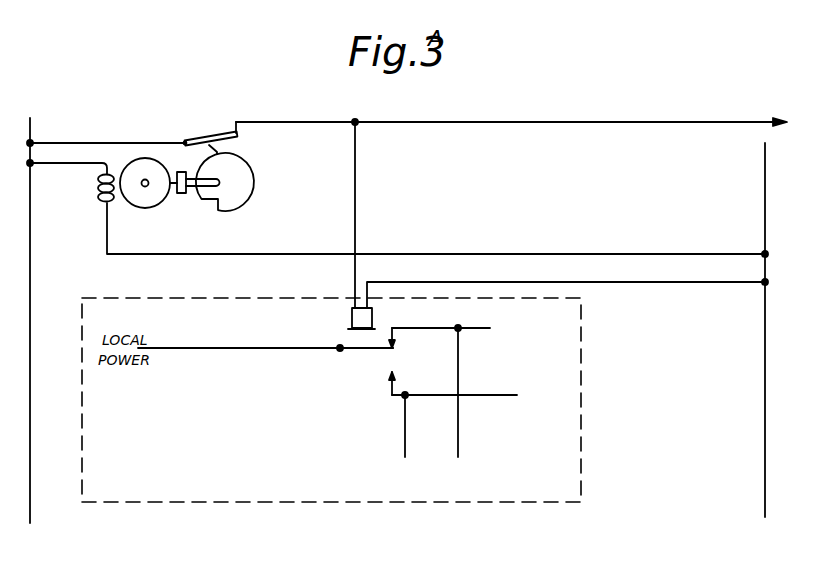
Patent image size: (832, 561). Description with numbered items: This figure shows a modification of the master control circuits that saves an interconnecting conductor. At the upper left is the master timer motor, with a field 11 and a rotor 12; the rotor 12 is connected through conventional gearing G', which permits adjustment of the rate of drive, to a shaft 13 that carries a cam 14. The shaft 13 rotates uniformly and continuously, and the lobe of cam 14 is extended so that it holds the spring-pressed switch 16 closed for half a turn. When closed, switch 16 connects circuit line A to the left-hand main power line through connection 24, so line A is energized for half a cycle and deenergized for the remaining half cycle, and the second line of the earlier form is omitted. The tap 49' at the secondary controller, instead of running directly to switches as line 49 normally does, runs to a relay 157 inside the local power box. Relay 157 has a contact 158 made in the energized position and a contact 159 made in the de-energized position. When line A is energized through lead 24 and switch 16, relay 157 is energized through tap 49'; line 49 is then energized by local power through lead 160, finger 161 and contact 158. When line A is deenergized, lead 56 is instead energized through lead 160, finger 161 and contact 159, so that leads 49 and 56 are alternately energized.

The connection 24 is at (92, 140).
The circuit line A is at (307, 121).
The switch 16 is at (206, 140).
The cam 14 is at (243, 172).
The shaft 13 is at (196, 190).
The gearing G' is at (176, 196).
The rotor 12 is at (156, 174).
The field 11 is at (98, 190).
The tap 49' is at (373, 215).
The relay 157 is at (371, 316).
The contact 158 is at (396, 343).
The contact 159 is at (397, 375).
The lead 160 is at (249, 348).
The finger 161 is at (375, 349).
The lead 56 is at (405, 425).
The line 49 is at (441, 391).